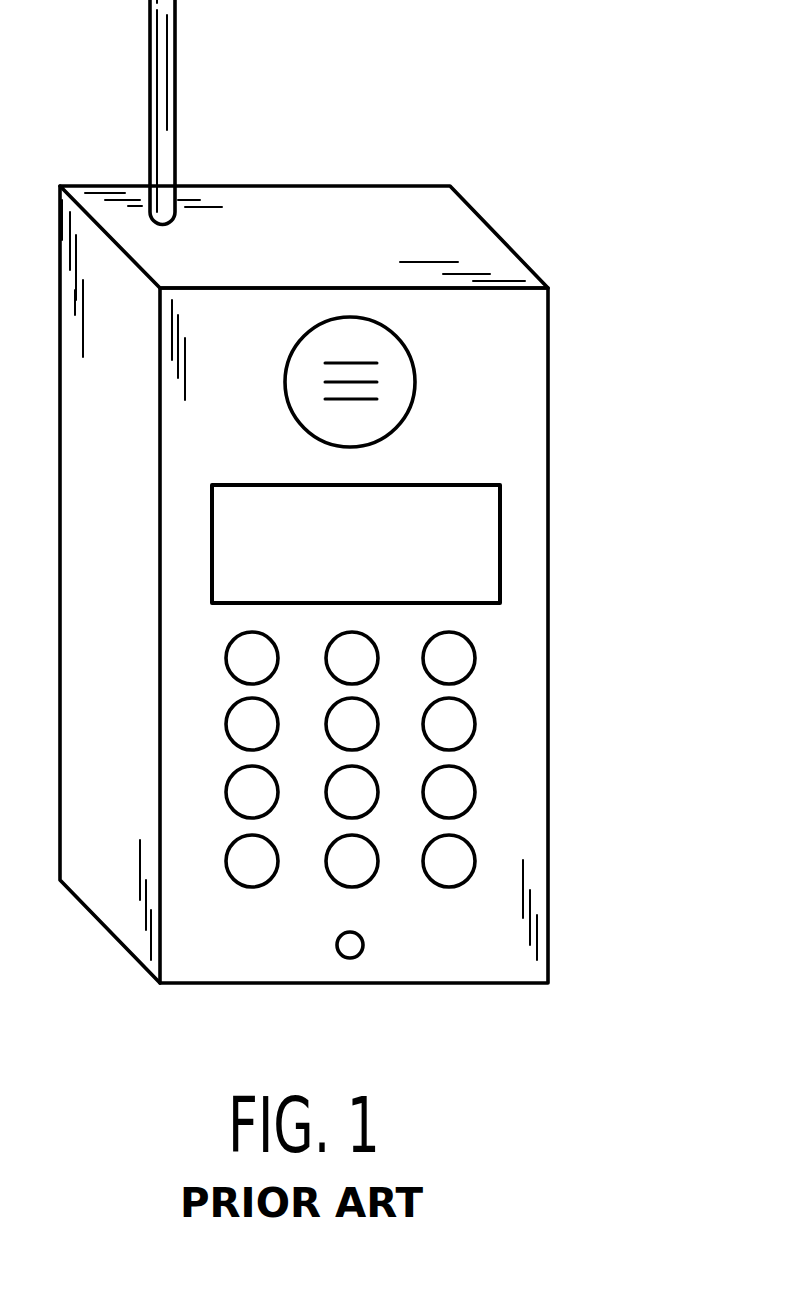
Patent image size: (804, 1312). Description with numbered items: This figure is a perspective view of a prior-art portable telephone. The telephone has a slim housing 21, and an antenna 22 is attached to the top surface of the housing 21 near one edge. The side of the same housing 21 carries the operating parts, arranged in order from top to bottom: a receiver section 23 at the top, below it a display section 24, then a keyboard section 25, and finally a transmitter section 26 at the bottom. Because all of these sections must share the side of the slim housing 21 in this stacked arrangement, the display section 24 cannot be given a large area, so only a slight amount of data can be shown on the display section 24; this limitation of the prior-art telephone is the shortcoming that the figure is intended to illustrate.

The housing 21 is at (453, 225).
The antenna 22 is at (176, 33).
The receiver section 23 is at (397, 406).
The display section 24 is at (483, 563).
The keyboard section 25 is at (512, 755).
The transmitter section 26 is at (340, 958).